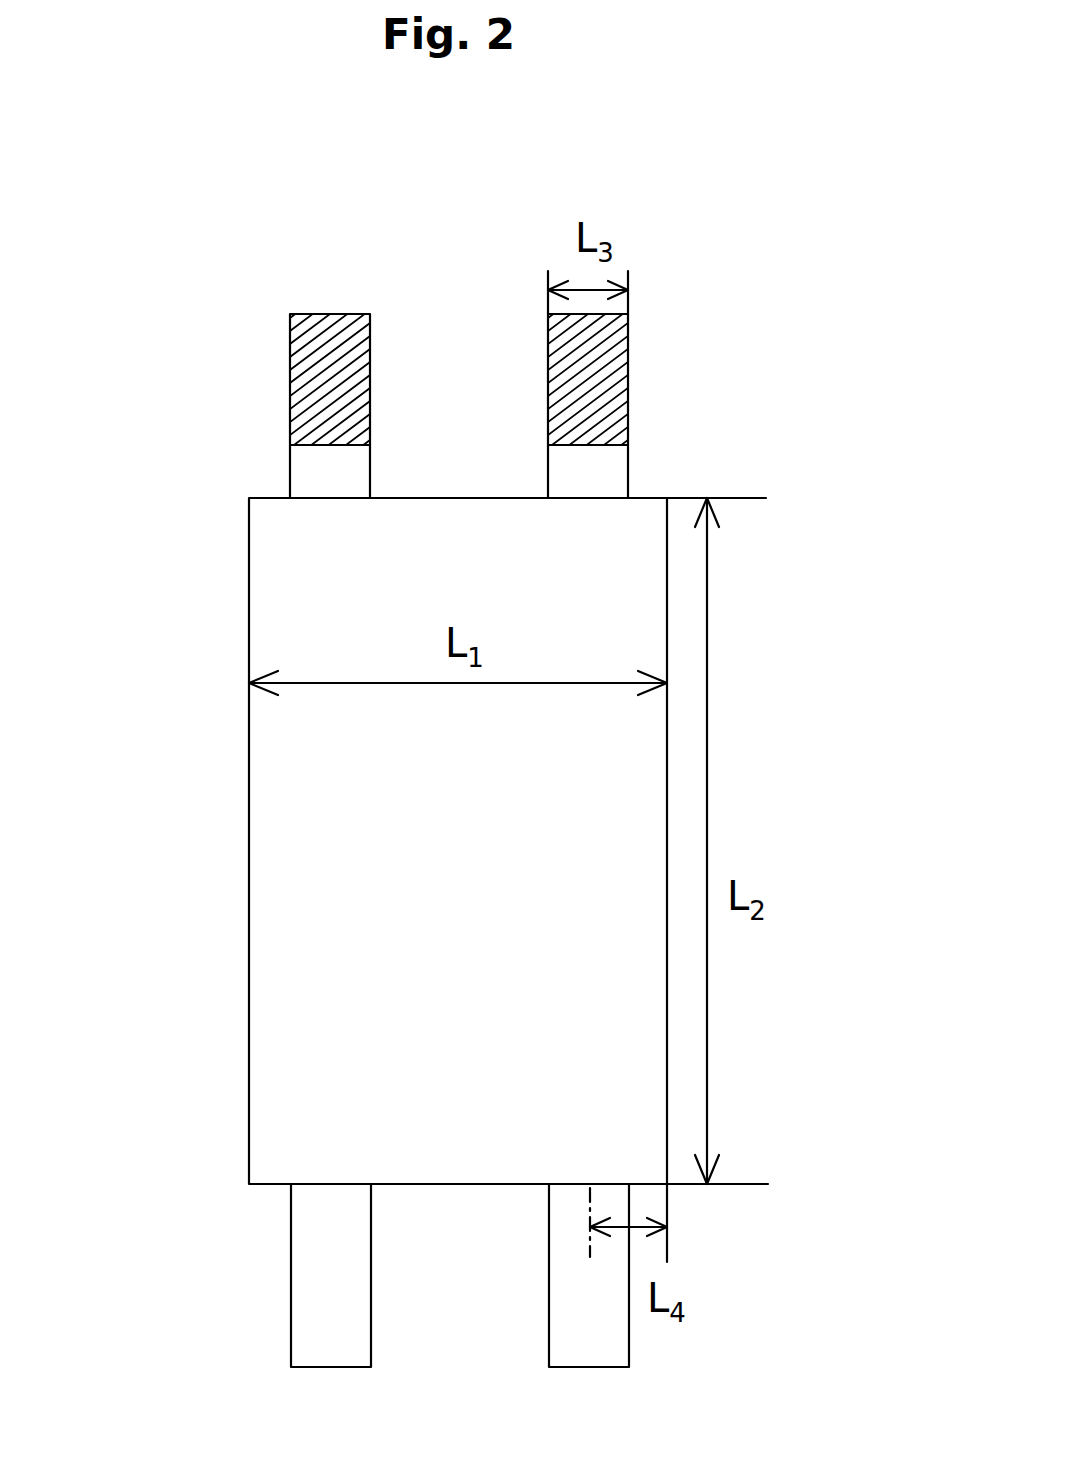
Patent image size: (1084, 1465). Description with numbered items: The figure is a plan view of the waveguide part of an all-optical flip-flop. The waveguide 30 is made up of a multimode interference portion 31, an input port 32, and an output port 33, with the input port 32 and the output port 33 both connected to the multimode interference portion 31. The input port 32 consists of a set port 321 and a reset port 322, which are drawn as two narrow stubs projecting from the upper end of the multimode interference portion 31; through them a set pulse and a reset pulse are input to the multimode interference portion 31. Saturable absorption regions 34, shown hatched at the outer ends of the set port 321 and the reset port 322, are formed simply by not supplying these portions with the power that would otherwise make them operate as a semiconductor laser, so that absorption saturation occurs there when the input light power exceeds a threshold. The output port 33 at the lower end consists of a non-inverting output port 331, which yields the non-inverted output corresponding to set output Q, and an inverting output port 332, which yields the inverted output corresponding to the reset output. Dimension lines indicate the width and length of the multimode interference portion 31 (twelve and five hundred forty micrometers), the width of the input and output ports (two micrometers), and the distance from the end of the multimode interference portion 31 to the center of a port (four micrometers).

The waveguide 30 is at (748, 628).
The multimode interference portion 31 is at (270, 882).
The input port 32 is at (772, 380).
The set port 321 is at (547, 465).
The reset port 322 is at (289, 476).
The output port 33 is at (706, 1260).
The non-inverting output port 331 is at (371, 1338).
The inverting output port 332 is at (629, 1338).
The saturable absorption region 34 is at (345, 384).